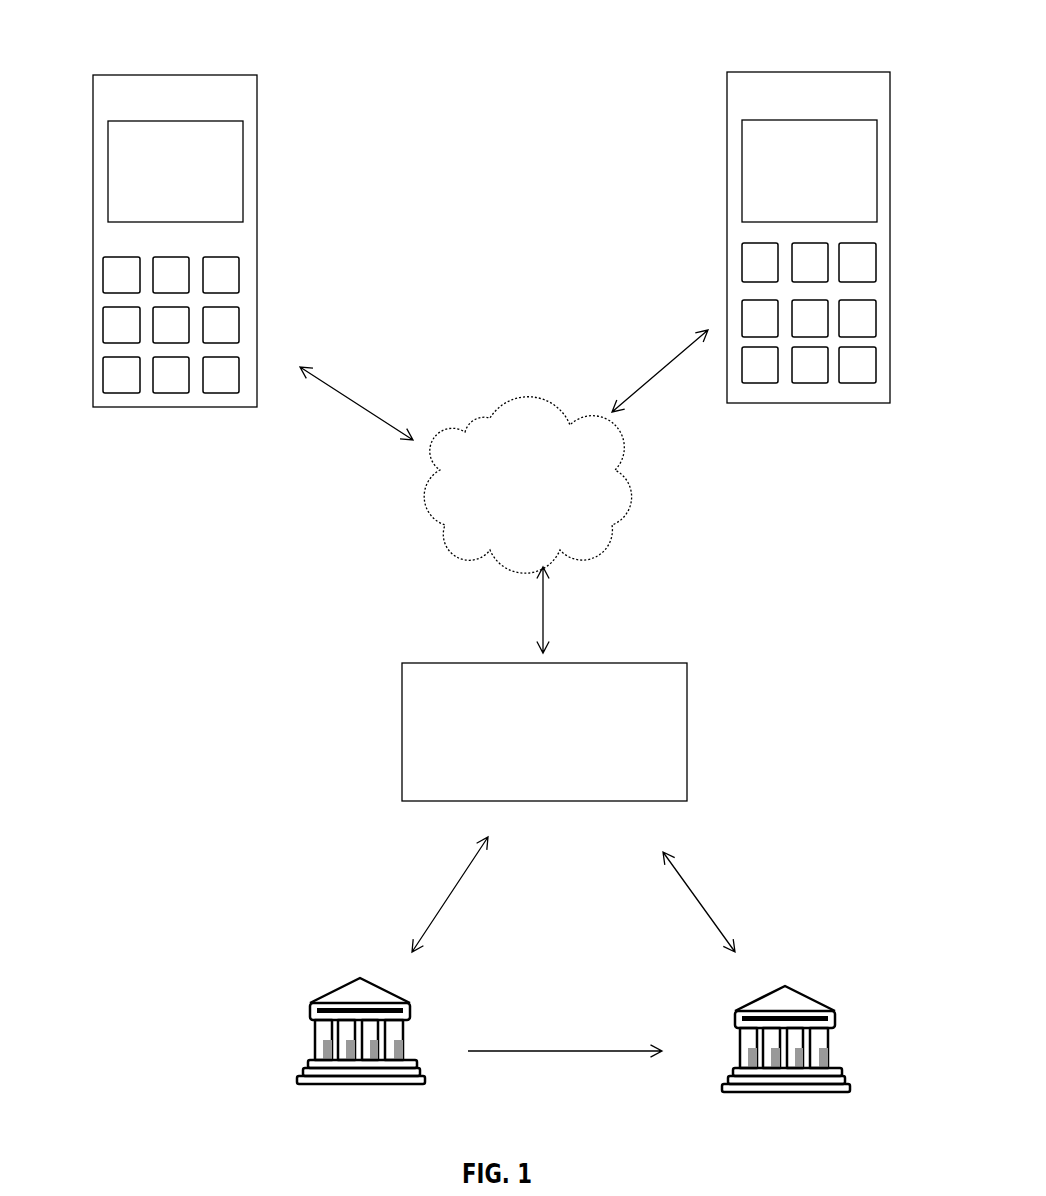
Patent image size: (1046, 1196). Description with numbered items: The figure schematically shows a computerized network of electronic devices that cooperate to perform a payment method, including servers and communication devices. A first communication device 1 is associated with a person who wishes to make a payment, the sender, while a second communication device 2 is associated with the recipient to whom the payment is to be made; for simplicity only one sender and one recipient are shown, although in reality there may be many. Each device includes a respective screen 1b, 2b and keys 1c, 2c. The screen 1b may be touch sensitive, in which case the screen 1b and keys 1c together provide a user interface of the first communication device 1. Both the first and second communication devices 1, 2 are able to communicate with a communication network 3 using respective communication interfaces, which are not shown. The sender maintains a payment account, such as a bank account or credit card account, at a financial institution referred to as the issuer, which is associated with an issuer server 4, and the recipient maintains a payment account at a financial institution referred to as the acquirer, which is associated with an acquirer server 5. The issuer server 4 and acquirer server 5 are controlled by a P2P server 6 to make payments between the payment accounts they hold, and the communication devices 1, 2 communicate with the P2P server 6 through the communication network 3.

The first communication device 1 is at (179, 206).
The screen 1b is at (245, 162).
The keys 1c is at (92, 257).
The second communication device 2 is at (794, 202).
The screen 2b is at (738, 155).
The keys 2c is at (912, 243).
The communication network 3 is at (527, 485).
The issuer server 4 is at (315, 1082).
The acquirer server 5 is at (778, 1088).
The P2P server 6 is at (544, 732).